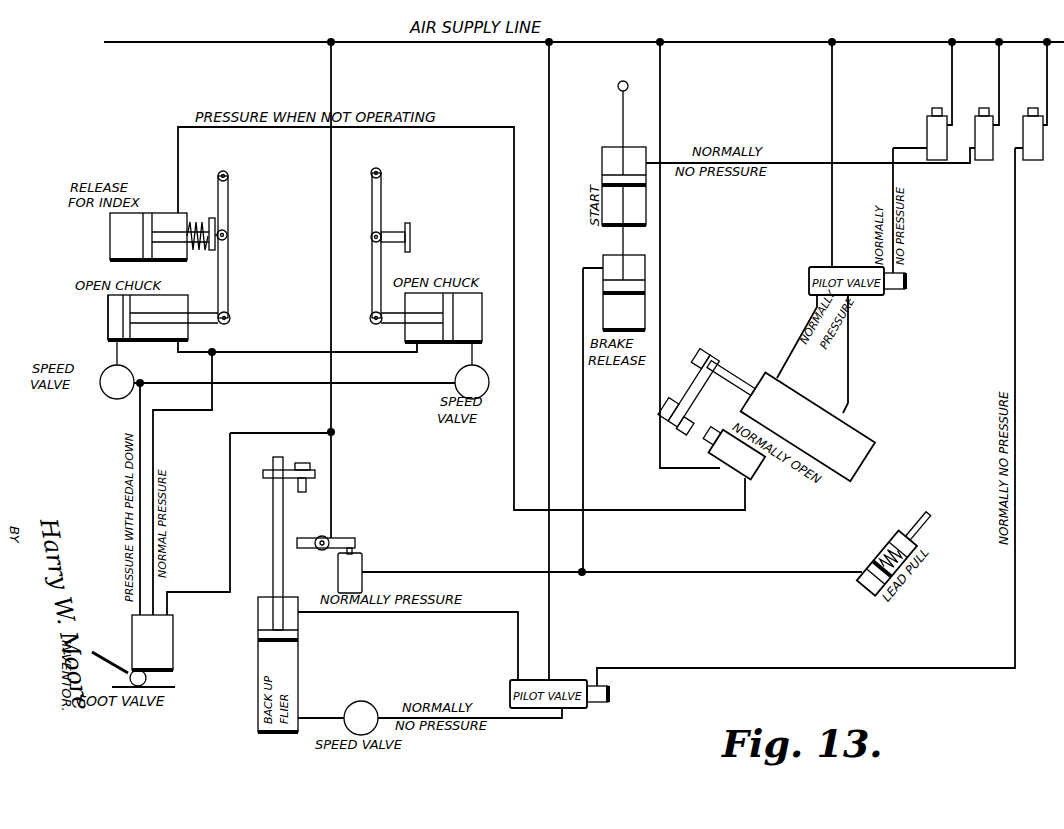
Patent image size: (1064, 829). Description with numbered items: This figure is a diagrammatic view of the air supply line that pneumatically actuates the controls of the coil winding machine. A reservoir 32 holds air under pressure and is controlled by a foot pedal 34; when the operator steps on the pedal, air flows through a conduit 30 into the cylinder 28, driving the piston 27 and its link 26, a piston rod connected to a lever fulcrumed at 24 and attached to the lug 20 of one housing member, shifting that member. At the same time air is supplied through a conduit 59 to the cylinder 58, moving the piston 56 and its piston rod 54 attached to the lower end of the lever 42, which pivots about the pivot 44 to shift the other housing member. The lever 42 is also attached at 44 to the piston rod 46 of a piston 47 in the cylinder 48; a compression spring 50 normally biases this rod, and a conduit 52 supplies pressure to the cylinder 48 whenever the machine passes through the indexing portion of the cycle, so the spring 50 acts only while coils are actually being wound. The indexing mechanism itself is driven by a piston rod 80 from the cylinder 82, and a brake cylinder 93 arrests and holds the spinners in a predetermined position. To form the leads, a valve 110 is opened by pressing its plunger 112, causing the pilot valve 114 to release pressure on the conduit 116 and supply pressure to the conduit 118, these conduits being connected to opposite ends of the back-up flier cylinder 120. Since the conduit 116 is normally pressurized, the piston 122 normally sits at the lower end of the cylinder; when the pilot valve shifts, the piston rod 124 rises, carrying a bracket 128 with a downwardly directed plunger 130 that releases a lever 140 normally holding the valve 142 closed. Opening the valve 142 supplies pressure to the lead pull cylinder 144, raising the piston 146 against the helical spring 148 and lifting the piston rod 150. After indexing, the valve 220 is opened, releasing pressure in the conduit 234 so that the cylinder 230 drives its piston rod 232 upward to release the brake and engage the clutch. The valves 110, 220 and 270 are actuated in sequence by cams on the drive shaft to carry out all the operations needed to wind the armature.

The lug 20 is at (392, 243).
The fulcrum 24 is at (374, 234).
The link 26 is at (406, 330).
The piston 27 is at (415, 335).
The cylinder 28 is at (459, 317).
The conduit 30 is at (481, 370).
The reservoir 32 is at (169, 641).
The foot pedal 34 is at (132, 655).
The lever 42 is at (240, 244).
The pivot 44 is at (244, 229).
The piston rod 46 is at (201, 252).
The piston 47 is at (141, 249).
The cylinder 48 is at (132, 240).
The compression spring 50 is at (180, 219).
The conduit 52 is at (446, 318).
The piston rod 54 is at (223, 330).
The piston 56 is at (149, 315).
The cylinder 58 is at (94, 322).
The conduit 59 is at (130, 369).
The piston rod 80 is at (714, 389).
The cylinder 82 is at (826, 399).
The brake cylinder 93 is at (653, 285).
The valve 110 is at (1041, 157).
The plunger 112 is at (1027, 97).
The pilot valve 114 is at (559, 678).
The conduit 116 is at (408, 646).
The conduit 118 is at (430, 705).
The back-up flier cylinder 120 is at (260, 664).
The piston 122 is at (259, 631).
The piston rod 124 is at (260, 543).
The bracket 128 is at (298, 450).
The plunger 130 is at (316, 469).
The lever 140 is at (305, 561).
The valve 142 is at (377, 573).
The lead pull cylinder 144 is at (871, 555).
The piston 146 is at (860, 592).
The helical spring 148 is at (882, 540).
The piston rod 150 is at (930, 516).
The valve 220 is at (986, 154).
The cylinder 230 is at (602, 180).
The piston rod 232 is at (658, 192).
The conduit 234 is at (808, 141).
The valve 270 is at (914, 134).